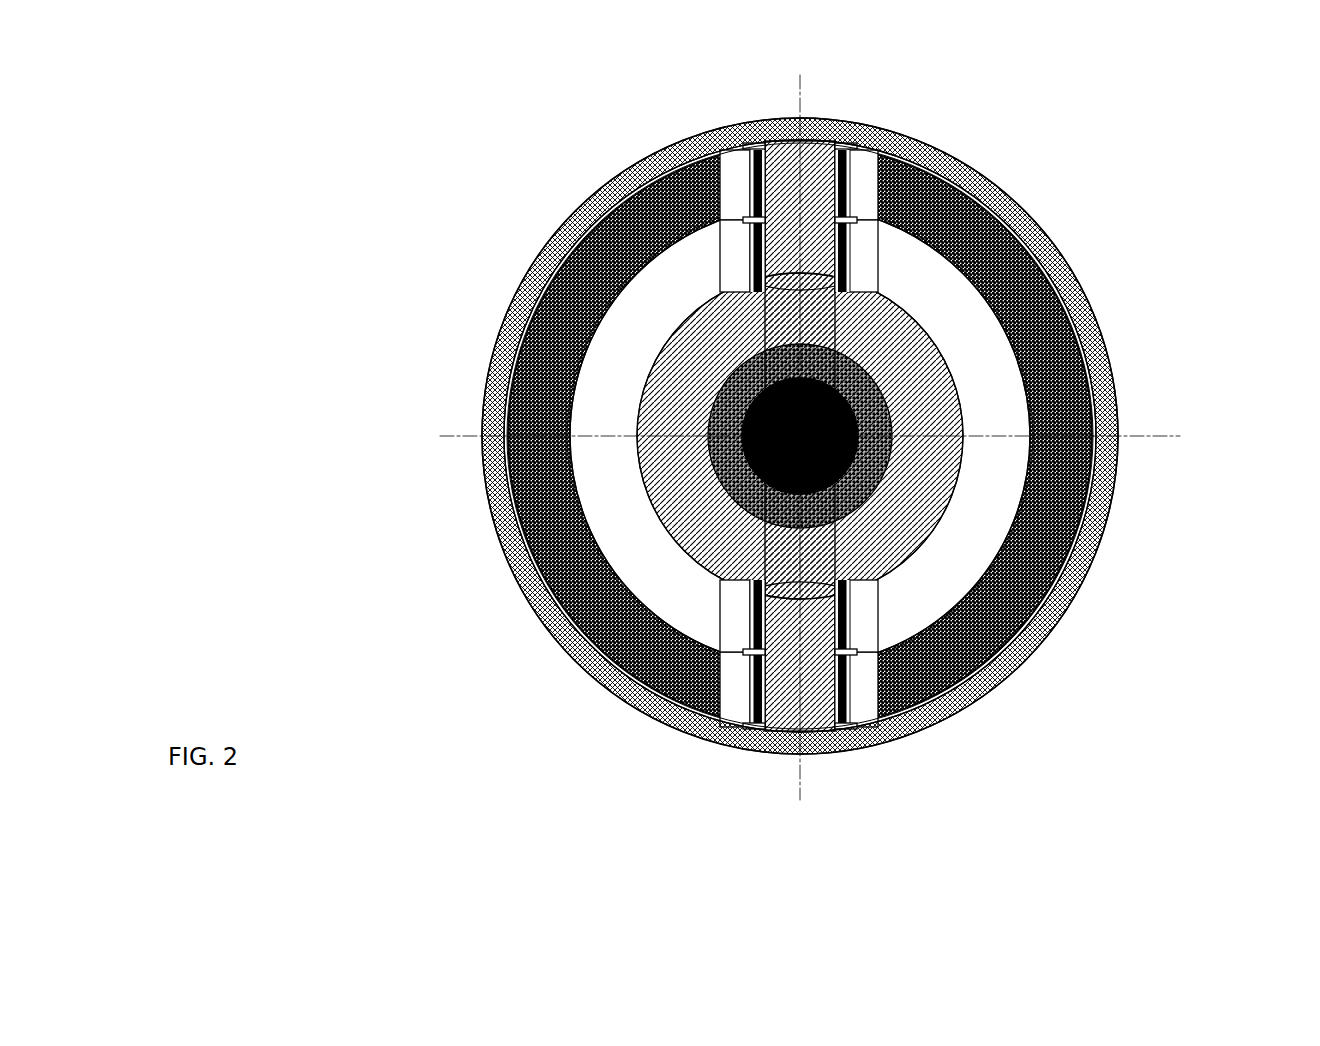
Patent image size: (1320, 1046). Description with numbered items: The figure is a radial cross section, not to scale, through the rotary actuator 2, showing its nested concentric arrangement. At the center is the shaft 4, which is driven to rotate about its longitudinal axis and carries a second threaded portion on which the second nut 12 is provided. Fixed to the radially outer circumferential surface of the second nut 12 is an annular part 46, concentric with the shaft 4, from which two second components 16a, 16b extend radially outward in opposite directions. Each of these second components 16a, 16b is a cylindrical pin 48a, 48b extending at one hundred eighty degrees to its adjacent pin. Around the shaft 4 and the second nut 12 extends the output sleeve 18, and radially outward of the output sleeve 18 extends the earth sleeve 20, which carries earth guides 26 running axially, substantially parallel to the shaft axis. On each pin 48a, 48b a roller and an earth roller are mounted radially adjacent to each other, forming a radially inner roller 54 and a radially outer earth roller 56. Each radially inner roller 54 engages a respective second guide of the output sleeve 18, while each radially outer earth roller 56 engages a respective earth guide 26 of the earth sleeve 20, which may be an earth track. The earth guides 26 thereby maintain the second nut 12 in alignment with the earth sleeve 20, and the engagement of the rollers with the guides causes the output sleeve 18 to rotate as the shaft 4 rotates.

The rotary actuator 2 is at (524, 205).
The shaft 4 is at (637, 463).
The second nut 12 is at (890, 403).
The second component 16a is at (853, 169).
The second component 16b is at (732, 700).
The output sleeve 18 is at (993, 500).
The earth sleeve 20 is at (1022, 663).
The earth guide 26 is at (890, 127).
The annular part 46 is at (930, 335).
The cylindrical pin 48a is at (855, 150).
The cylindrical pin 48b is at (740, 742).
The radially inner roller 54 is at (872, 260).
The radially outer earth roller 56 is at (868, 198).